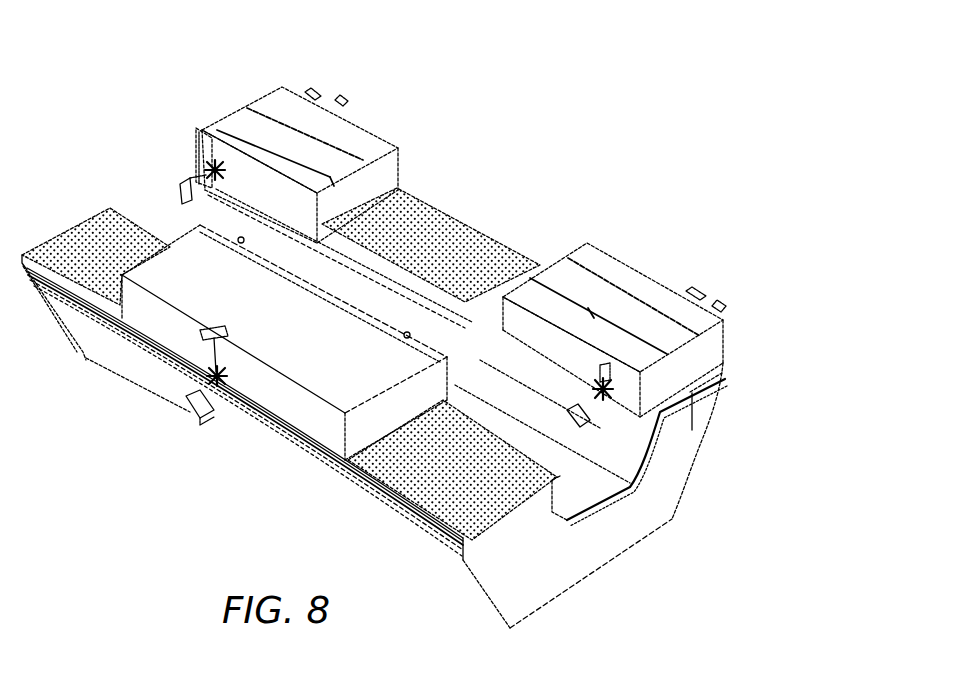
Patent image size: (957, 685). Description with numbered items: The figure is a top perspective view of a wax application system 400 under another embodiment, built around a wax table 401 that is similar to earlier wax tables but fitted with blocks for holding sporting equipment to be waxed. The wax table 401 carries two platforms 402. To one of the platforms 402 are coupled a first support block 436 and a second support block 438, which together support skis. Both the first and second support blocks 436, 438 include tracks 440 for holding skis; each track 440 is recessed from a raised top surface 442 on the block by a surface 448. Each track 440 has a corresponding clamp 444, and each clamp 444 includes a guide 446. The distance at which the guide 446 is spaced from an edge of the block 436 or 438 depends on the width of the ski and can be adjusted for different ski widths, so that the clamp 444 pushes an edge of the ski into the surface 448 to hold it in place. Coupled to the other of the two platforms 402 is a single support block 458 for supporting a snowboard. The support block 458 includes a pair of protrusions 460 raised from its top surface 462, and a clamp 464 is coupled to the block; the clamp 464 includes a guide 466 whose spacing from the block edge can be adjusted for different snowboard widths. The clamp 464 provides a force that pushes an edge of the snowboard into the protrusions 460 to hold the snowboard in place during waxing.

The wax application system 400 is at (600, 68).
The wax table 401 is at (715, 452).
The platforms 402 is at (373, 487).
The first support block 436 is at (700, 352).
The second support block 438 is at (203, 145).
The tracks 440 is at (240, 127).
The raised top surface 442 is at (300, 105).
The clamp 444 is at (347, 108).
The guide 446 is at (216, 150).
The surface 448 is at (330, 178).
The support block 458 is at (140, 303).
The protrusions 460 is at (240, 244).
The top surface 462 is at (300, 328).
The clamp 464 is at (190, 412).
The guide 466 is at (212, 338).